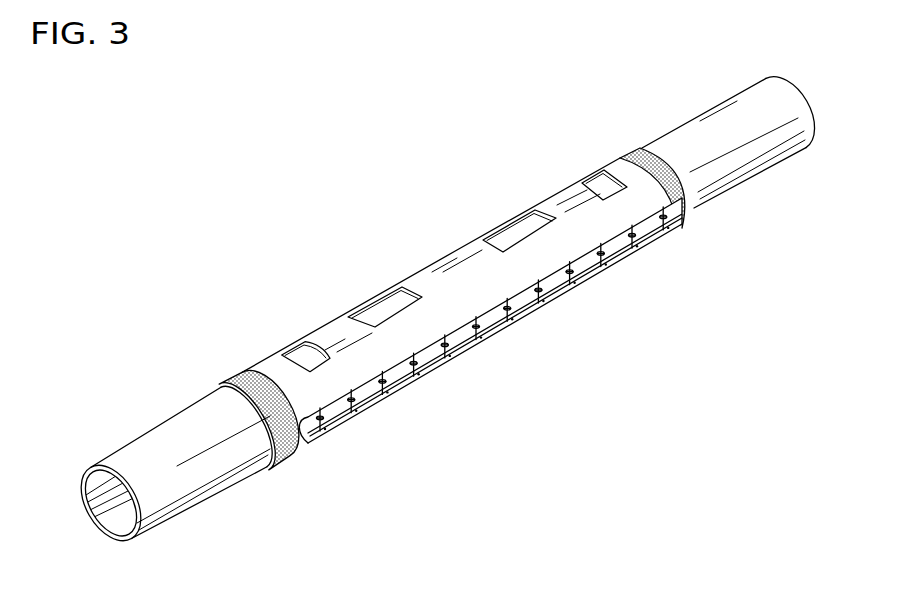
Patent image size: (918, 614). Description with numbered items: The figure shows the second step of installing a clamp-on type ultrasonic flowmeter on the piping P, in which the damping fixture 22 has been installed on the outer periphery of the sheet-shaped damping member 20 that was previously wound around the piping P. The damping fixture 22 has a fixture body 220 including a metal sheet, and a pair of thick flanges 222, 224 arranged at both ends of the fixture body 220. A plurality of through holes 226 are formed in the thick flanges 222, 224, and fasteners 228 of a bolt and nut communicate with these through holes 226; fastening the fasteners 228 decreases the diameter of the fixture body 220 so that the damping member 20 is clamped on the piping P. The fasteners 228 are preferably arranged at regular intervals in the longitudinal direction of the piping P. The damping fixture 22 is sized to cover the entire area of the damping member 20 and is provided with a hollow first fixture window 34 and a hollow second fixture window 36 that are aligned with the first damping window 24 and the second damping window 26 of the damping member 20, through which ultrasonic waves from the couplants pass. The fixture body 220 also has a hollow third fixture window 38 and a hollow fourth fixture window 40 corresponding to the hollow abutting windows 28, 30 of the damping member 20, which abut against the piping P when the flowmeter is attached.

The piping P is at (148, 458).
The damping member 20 is at (242, 373).
The fixture body 220 is at (431, 265).
The damping fixture 22 is at (435, 305).
The first fixture window 34 is at (371, 285).
The first damping window 24 is at (376, 318).
The second fixture window 36 is at (514, 205).
The second damping window 26 is at (527, 230).
The third fixture window 38 is at (286, 327).
The abutting window 28 is at (301, 348).
The fourth fixture window 40 is at (589, 158).
The abutting window 30 is at (606, 183).
The thick flange 222 is at (372, 388).
The thick flange 224 is at (340, 424).
The through hole 226 is at (552, 300).
The fastener 228 is at (290, 455).